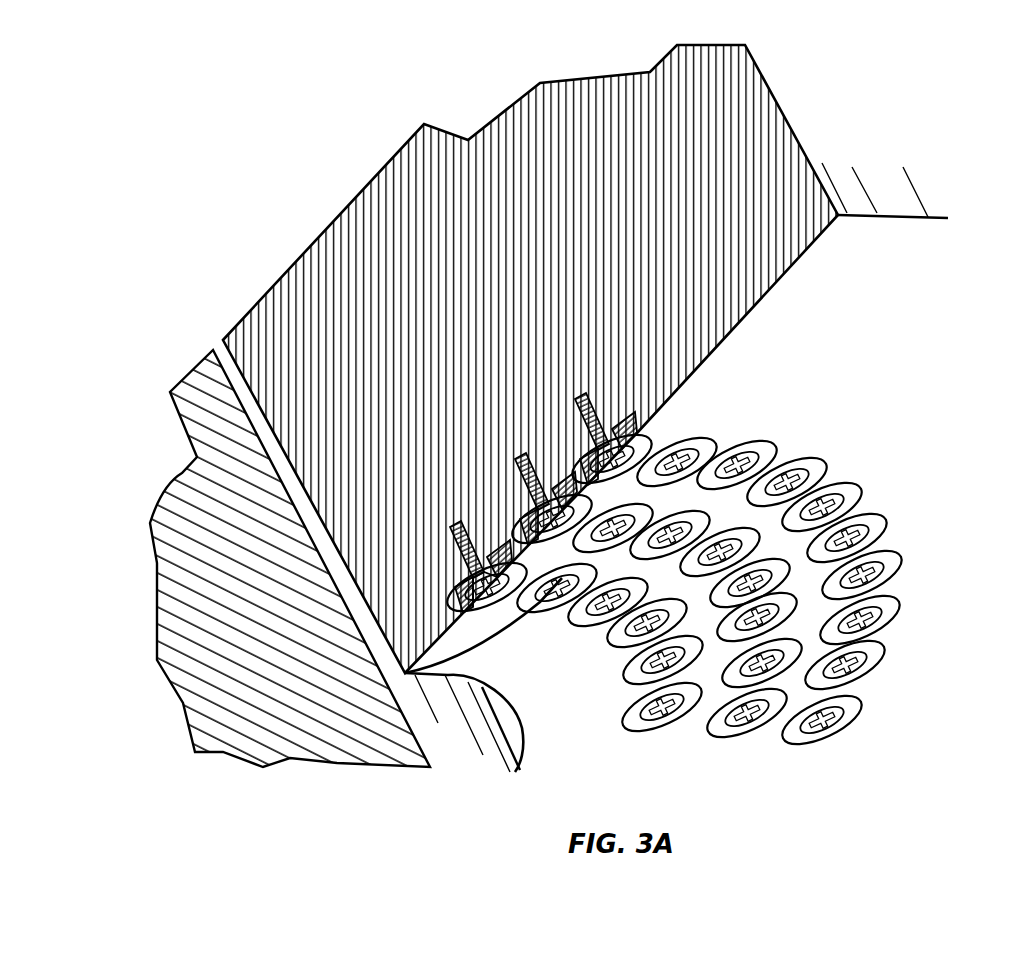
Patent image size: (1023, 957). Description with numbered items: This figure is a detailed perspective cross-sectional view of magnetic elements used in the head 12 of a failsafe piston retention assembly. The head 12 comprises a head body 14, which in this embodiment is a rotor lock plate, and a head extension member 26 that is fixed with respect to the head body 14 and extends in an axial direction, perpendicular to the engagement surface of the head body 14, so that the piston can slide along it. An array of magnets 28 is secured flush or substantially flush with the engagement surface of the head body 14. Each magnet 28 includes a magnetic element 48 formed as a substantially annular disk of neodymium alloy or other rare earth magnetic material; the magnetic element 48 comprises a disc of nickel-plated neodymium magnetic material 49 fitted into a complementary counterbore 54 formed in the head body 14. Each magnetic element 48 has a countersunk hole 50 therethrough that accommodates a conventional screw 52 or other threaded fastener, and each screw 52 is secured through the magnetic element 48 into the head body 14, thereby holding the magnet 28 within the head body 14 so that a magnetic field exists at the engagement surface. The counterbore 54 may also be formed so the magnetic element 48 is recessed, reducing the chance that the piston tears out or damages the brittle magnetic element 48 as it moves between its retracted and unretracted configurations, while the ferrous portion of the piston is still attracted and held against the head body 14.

The head 12 is at (260, 208).
The head body 14 is at (290, 300).
The head extension member 26 is at (197, 395).
The magnet 28 is at (405, 673).
The magnetic element 48 is at (462, 612).
The neodymium magnetic material 49 is at (473, 578).
The countersunk hole 50 is at (452, 530).
The screw 52 is at (488, 556).
The counterbore 54 is at (468, 600).